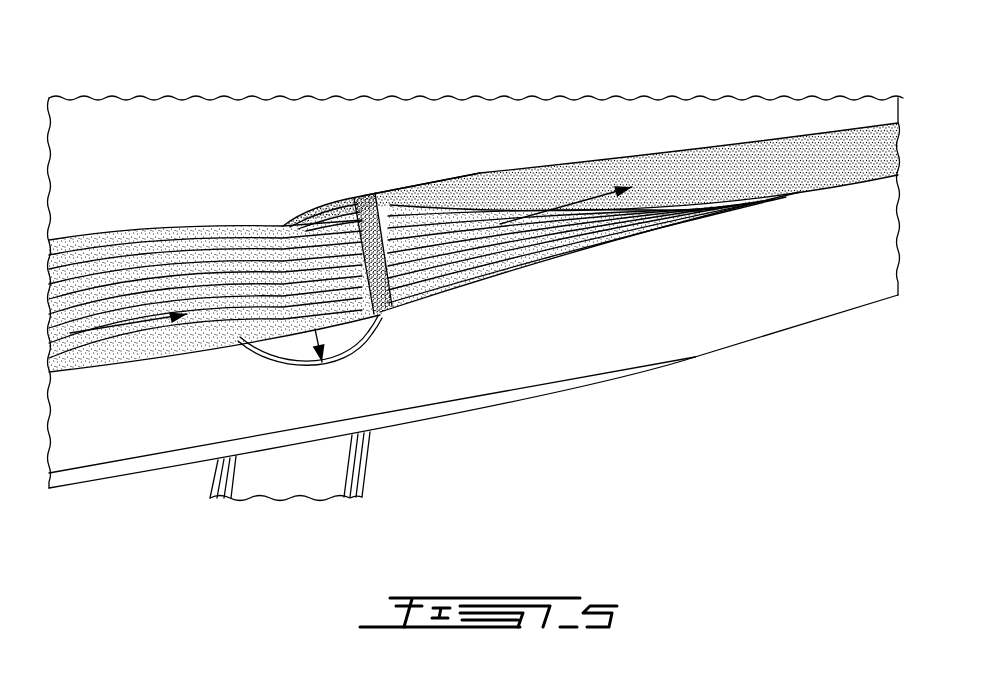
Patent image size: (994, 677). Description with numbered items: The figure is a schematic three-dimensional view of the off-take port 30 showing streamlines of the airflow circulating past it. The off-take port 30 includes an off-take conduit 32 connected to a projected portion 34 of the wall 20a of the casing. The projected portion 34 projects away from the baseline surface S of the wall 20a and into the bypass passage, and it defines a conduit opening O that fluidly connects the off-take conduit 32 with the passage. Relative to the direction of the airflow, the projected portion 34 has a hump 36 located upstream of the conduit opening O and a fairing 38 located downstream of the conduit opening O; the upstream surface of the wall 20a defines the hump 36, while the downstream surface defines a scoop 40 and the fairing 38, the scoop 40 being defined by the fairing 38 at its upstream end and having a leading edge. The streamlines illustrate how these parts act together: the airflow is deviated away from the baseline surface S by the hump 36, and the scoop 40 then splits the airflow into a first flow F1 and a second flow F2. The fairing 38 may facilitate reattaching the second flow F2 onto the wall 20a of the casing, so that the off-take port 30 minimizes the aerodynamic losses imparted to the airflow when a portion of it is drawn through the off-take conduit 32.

The off-take port 30 is at (287, 185).
The scoop 40 is at (375, 232).
The baseline surface S is at (392, 151).
The second flow F2 is at (573, 203).
The fairing 38 is at (635, 258).
The wall 20a is at (835, 262).
The projected portion 34 is at (548, 336).
The hump 36 is at (177, 387).
The conduit opening O is at (338, 337).
The off-take conduit 32 is at (372, 462).
The first flow F1 is at (113, 323).